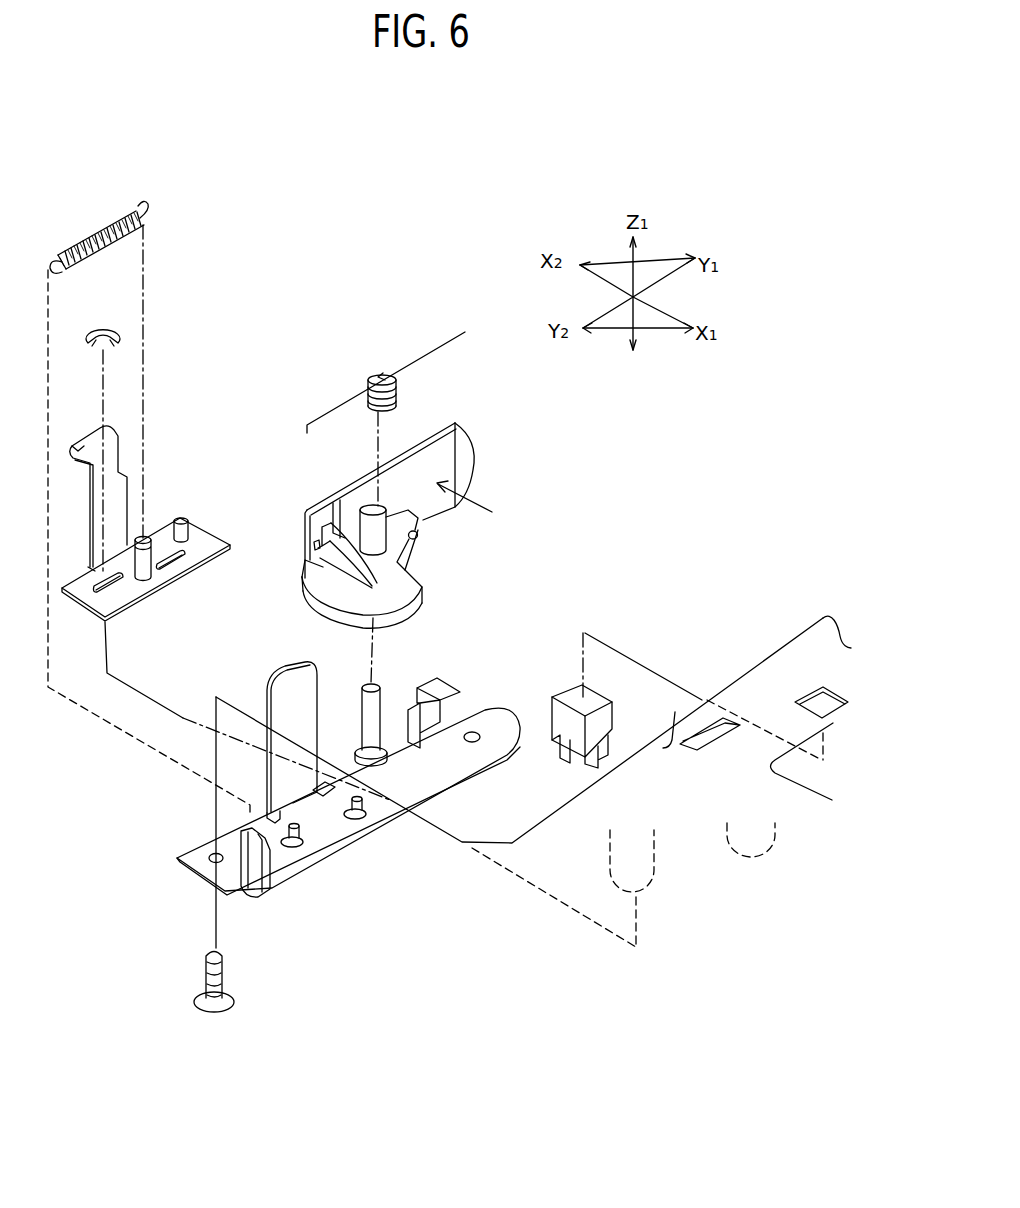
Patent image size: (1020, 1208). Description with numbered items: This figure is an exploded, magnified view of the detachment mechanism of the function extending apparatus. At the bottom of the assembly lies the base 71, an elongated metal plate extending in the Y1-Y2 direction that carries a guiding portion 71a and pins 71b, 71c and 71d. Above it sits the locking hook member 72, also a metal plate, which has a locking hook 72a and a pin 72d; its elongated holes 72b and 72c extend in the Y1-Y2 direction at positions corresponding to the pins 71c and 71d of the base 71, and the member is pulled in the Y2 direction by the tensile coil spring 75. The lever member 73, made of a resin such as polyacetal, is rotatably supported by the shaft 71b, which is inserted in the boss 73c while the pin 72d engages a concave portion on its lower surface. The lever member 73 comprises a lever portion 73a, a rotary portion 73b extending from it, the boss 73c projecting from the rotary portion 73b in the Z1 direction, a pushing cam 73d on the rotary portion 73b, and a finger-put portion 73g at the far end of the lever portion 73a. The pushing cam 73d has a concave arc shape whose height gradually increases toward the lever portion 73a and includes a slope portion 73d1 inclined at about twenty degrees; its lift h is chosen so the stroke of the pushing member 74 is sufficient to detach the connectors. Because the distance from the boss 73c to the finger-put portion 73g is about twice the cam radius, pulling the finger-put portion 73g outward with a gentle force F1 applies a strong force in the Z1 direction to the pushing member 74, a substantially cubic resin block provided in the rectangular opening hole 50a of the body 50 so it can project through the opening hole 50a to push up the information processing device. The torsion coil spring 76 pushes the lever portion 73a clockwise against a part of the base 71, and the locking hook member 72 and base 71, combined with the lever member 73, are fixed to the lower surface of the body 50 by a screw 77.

The body 50 is at (715, 687).
The opening hole 50a is at (812, 697).
The base 71 is at (323, 867).
The guiding portion 71a is at (291, 683).
The pin 71b is at (383, 693).
The pin 71c is at (288, 840).
The pin 71d is at (357, 821).
The locking hook member 72 is at (84, 547).
The locking hook 72a is at (70, 458).
The elongated hole 72b is at (100, 598).
The elongated hole 72c is at (185, 573).
The pin 72d is at (184, 519).
The lever member 73 is at (401, 442).
The lever portion 73a is at (437, 440).
The rotary portion 73b is at (408, 578).
The boss 73c is at (385, 537).
The pushing cam 73d is at (326, 528).
The slope portion 73d1 is at (405, 605).
The finger-put portion 73g is at (465, 455).
The pushing member 74 is at (570, 692).
The tensile coil spring 75 is at (92, 236).
The torsion coil spring 76 is at (364, 383).
The screw 77 is at (204, 966).
The gentle force F1 is at (477, 503).
The lift h is at (316, 548).